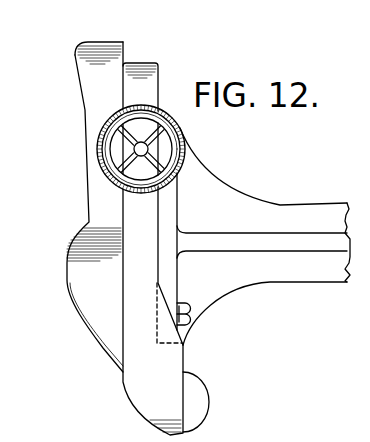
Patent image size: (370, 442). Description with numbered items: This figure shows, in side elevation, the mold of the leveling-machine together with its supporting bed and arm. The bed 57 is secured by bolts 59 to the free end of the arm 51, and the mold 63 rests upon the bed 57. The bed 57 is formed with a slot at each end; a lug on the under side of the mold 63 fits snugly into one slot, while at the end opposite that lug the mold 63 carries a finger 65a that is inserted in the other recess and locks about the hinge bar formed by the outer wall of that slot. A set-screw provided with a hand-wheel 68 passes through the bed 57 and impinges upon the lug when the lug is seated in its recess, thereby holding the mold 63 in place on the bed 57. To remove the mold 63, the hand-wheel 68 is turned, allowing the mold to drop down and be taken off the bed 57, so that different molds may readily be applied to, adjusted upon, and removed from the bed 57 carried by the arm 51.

The arm 51 is at (220, 218).
The bed 57 is at (140, 82).
The bolts 59 is at (188, 312).
The mold 63 is at (98, 195).
The finger 65a is at (193, 393).
The hand-wheel 68 is at (97, 147).